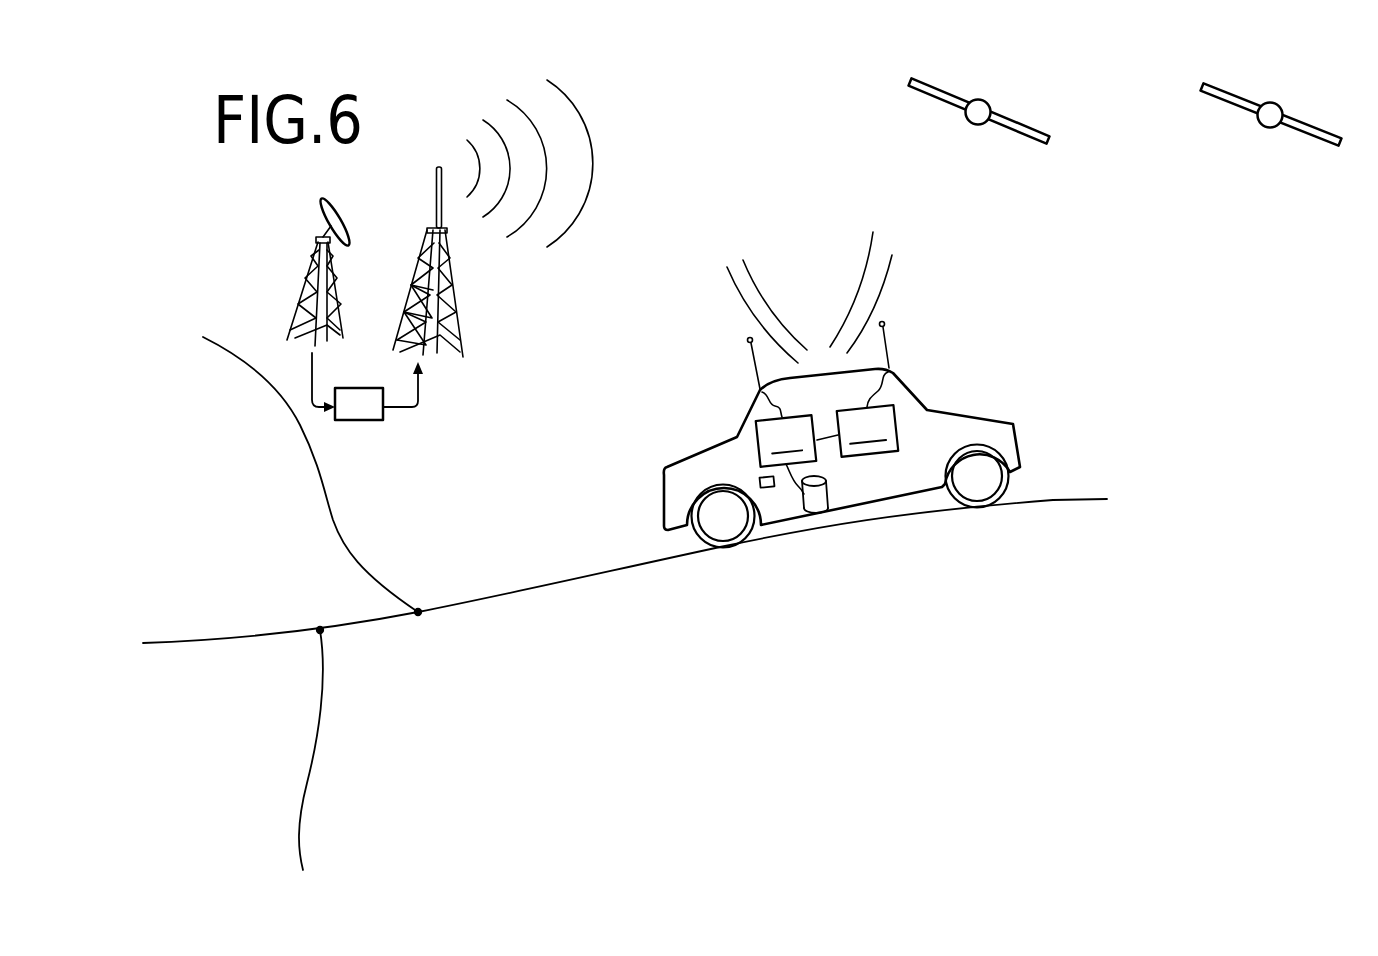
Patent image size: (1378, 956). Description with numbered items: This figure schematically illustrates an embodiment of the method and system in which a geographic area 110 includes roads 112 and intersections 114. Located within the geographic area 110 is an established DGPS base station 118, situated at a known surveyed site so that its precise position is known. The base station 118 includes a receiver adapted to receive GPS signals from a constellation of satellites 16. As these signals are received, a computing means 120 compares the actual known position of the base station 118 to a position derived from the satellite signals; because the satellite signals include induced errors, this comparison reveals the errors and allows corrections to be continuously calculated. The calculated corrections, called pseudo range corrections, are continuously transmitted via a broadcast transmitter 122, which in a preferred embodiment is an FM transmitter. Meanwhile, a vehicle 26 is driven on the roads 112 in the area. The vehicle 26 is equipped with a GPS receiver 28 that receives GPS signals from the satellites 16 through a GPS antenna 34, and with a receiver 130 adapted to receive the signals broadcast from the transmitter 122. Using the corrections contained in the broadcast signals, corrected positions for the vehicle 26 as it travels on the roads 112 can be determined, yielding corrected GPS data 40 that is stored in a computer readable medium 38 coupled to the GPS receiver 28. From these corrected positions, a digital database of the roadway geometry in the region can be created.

The GPS satellites 16 is at (1016, 108).
The vehicle 26 is at (677, 438).
The GPS receiver 28 is at (797, 441).
The GPS antenna 34 is at (752, 362).
The computer readable medium 38 is at (828, 493).
The corrected GPS data 40 is at (762, 480).
The geographic area 110 is at (674, 736).
The roads 112 is at (367, 571).
The intersections 114 is at (320, 630).
The DGPS base station 118 is at (290, 279).
The computing means 120 is at (372, 420).
The broadcast transmitter 122 is at (417, 267).
The receiver 130 is at (867, 431).